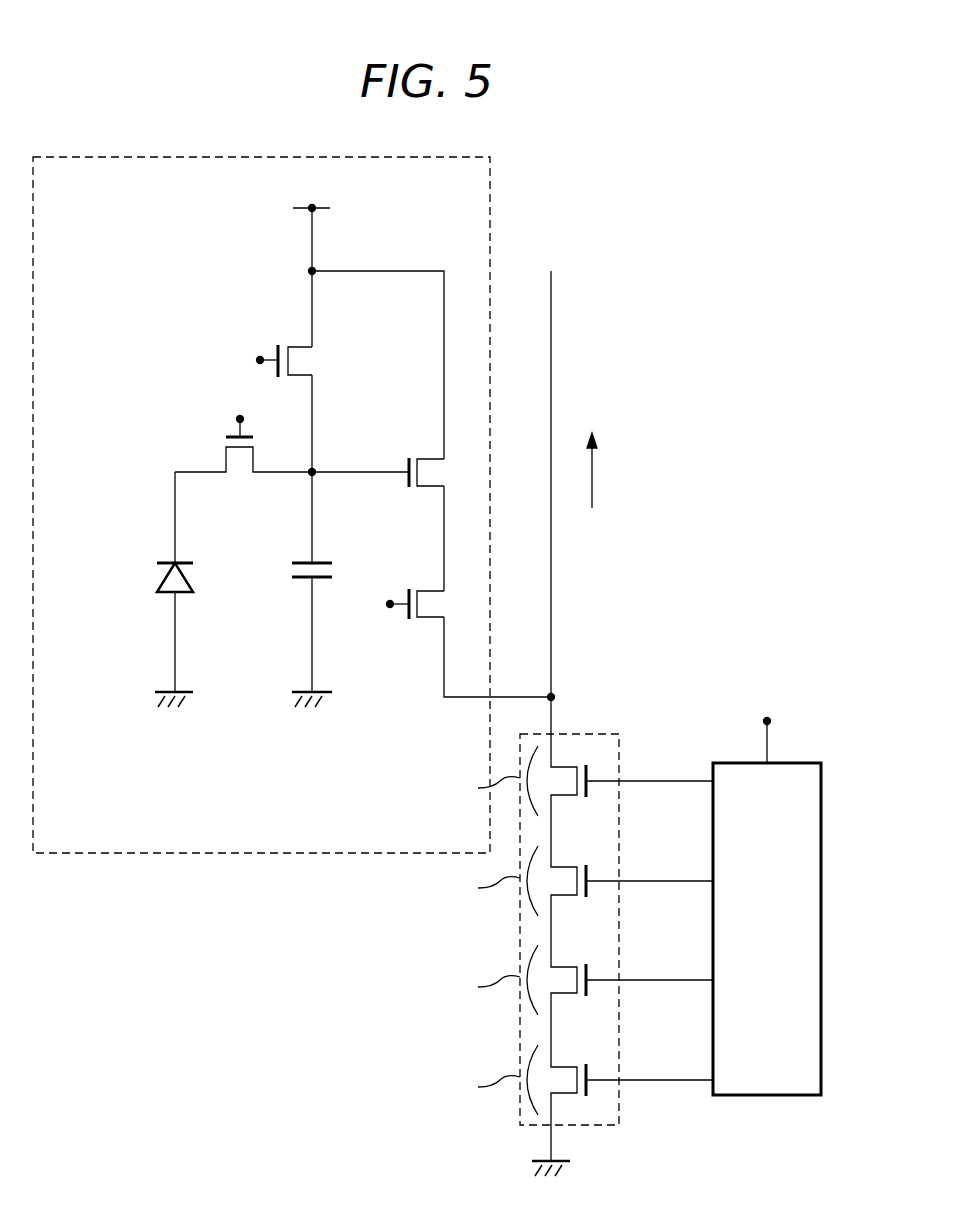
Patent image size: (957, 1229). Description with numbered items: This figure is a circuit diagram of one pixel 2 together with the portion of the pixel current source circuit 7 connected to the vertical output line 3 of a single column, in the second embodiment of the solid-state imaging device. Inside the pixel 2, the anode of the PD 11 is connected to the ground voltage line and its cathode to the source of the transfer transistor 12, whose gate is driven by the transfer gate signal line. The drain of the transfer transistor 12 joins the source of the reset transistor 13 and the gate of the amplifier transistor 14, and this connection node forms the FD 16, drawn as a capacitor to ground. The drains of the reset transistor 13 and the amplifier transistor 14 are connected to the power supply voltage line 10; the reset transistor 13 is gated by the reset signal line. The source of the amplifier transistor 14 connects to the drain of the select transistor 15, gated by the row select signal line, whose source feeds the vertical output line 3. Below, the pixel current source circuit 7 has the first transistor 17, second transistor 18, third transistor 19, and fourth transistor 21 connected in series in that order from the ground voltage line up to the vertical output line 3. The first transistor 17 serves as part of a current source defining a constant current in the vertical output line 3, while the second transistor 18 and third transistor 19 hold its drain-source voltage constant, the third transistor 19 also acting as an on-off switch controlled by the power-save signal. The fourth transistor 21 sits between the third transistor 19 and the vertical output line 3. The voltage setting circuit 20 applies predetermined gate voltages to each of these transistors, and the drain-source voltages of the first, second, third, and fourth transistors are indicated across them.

The pixel 2 is at (490, 173).
The vertical output line 3 is at (551, 340).
The pixel current source circuit 7 is at (600, 733).
The power supply voltage line 10 is at (325, 205).
The PD (PhotoDiode) 11 is at (151, 581).
The transfer transistor 12 is at (216, 444).
The reset transistor 13 is at (273, 346).
The amplifier transistor 14 is at (413, 453).
The select transistor 15 is at (399, 589).
The FD (Floating Diffusion) 16 is at (284, 572).
The first transistor 17 is at (596, 1090).
The second transistor 18 is at (596, 990).
The third transistor 19 is at (596, 891).
The voltage setting circuit 20 is at (767, 1097).
The fourth transistor 21 is at (596, 791).